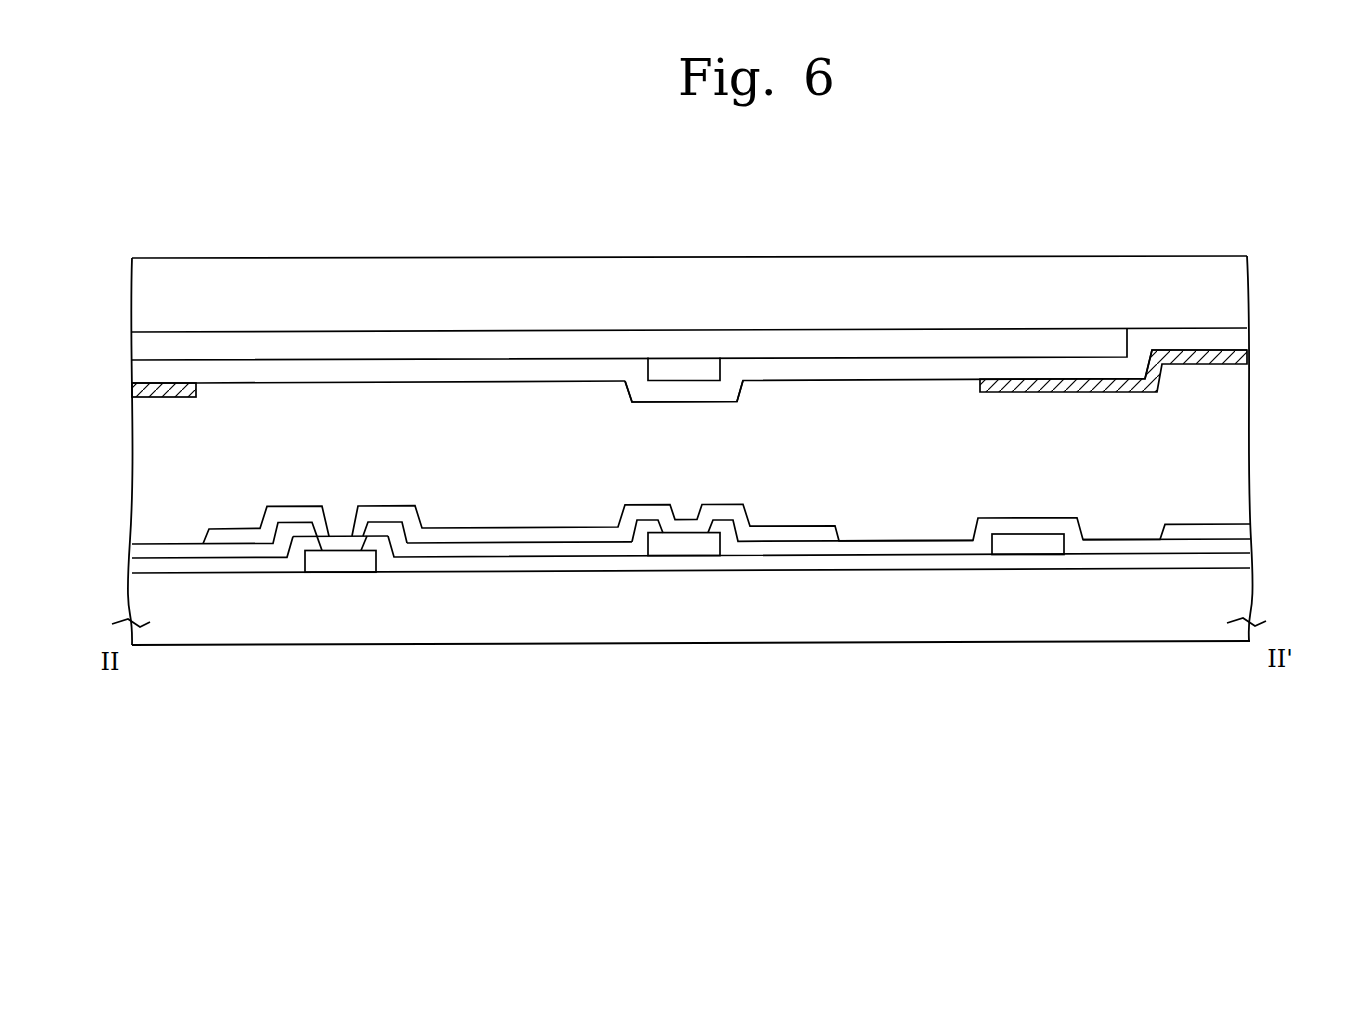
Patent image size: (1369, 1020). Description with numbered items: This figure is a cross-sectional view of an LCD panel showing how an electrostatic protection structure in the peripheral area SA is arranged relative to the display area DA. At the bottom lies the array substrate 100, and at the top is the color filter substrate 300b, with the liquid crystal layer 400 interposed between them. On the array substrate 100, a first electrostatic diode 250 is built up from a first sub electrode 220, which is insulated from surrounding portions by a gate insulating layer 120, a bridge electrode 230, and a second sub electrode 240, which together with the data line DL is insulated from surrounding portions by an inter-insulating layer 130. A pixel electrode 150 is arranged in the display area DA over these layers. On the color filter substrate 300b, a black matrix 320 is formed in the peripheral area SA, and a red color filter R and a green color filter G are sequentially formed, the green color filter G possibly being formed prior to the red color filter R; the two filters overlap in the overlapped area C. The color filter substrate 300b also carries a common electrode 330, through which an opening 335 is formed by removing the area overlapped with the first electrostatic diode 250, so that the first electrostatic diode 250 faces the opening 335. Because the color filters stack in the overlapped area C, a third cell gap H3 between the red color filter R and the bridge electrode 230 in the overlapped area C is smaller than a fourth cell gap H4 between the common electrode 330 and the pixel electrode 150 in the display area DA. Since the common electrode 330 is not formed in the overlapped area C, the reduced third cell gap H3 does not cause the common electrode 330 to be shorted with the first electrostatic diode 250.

The array substrate 100 is at (1235, 603).
The gate insulating layer 120 is at (1235, 560).
The inter-insulating layer 130 is at (1235, 548).
The pixel electrode 150 is at (1237, 533).
The first sub electrode 220 is at (340, 565).
The bridge electrode 230 is at (487, 541).
The second sub electrode 240 is at (683, 552).
The first electrostatic diode 250 is at (317, 708).
The color filter substrate 300b is at (1240, 293).
The black matrix 320 is at (383, 343).
The common electrode 330 is at (133, 392).
The opening 335 is at (463, 395).
The liquid crystal layer 400 is at (1240, 440).
The data line DL is at (1027, 552).
The red color filter R is at (567, 365).
The green color filter G is at (680, 367).
The overlapped area C is at (705, 393).
The third cell gap H3 is at (648, 403).
The fourth cell gap H4 is at (1199, 365).
The peripheral area SA is at (992, 650).
The display area DA is at (1249, 650).